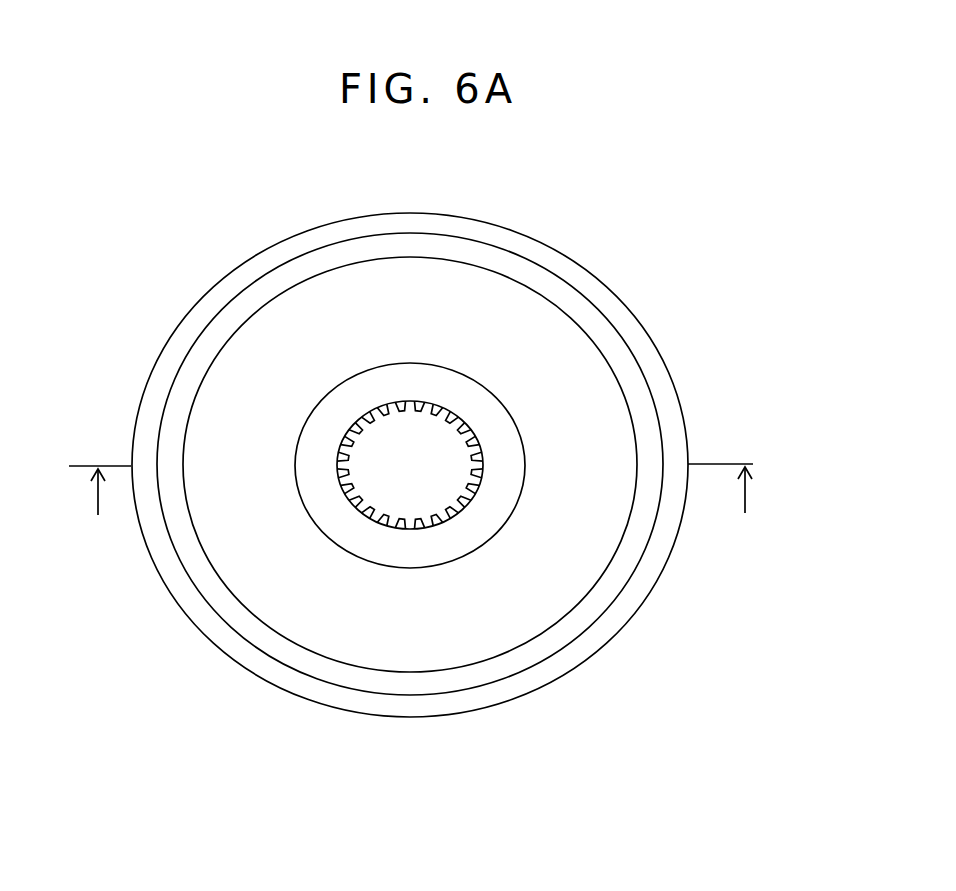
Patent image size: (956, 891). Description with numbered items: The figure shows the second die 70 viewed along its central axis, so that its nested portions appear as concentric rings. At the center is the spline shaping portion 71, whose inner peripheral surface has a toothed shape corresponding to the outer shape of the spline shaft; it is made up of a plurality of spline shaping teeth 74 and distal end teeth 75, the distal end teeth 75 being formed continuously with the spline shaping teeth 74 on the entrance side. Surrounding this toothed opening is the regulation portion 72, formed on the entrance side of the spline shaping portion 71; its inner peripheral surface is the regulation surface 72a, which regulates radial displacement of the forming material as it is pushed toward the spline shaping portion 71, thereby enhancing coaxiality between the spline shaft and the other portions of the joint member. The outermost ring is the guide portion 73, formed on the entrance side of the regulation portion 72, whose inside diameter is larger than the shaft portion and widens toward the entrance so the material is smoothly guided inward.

The second die 70 is at (707, 248).
The spline shaping portion 71 is at (418, 593).
The regulation portion 72 is at (418, 593).
The regulation surface 72a is at (408, 529).
The guide portion 73 is at (347, 523).
The spline shaping teeth 74 is at (410, 328).
The distal end teeth 75 is at (431, 401).